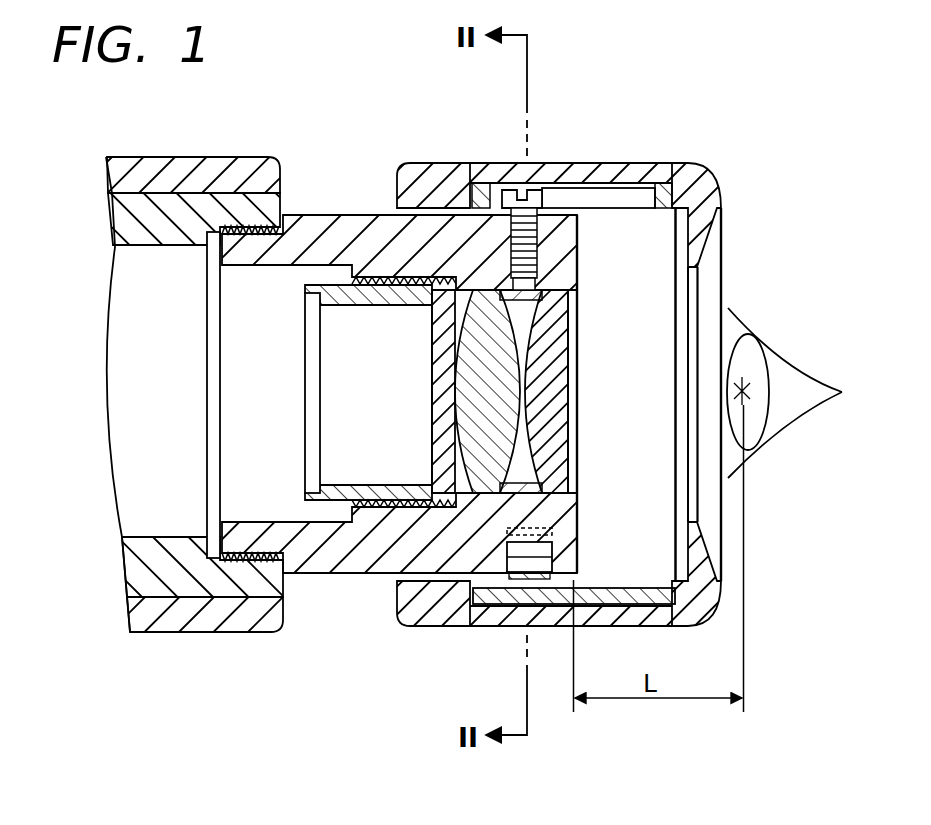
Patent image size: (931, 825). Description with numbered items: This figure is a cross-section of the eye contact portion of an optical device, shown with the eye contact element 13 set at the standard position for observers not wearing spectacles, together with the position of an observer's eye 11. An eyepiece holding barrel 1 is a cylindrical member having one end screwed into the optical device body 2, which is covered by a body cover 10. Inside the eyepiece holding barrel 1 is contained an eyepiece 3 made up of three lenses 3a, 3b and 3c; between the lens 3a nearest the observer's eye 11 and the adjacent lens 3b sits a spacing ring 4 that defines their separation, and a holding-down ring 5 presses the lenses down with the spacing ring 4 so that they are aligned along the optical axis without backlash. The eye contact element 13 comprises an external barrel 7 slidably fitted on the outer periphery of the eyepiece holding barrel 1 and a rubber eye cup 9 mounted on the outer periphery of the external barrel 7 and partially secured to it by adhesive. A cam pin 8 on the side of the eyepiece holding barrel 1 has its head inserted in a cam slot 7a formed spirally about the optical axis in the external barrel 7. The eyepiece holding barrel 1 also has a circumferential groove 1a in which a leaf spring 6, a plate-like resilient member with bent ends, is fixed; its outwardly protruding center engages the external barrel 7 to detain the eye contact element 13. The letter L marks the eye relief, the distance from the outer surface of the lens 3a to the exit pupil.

The eyepiece holding barrel 1 is at (320, 212).
The circumferential groove 1a is at (478, 585).
The optical device body 2 is at (226, 207).
The eyepiece 3 is at (499, 391).
The lens 3a is at (537, 418).
The lens 3b is at (462, 392).
The lens 3c is at (440, 328).
The spacing ring 4 is at (493, 290).
The holding-down ring 5 is at (380, 282).
The leaf spring 6 is at (517, 578).
The external barrel 7 is at (670, 165).
The cam slot 7a is at (612, 192).
The cam pin 8 is at (538, 205).
The eye cup 9 is at (713, 167).
The body cover 10 is at (130, 177).
The observer's eye 11 is at (760, 362).
The eye contact element 13 is at (736, 197).